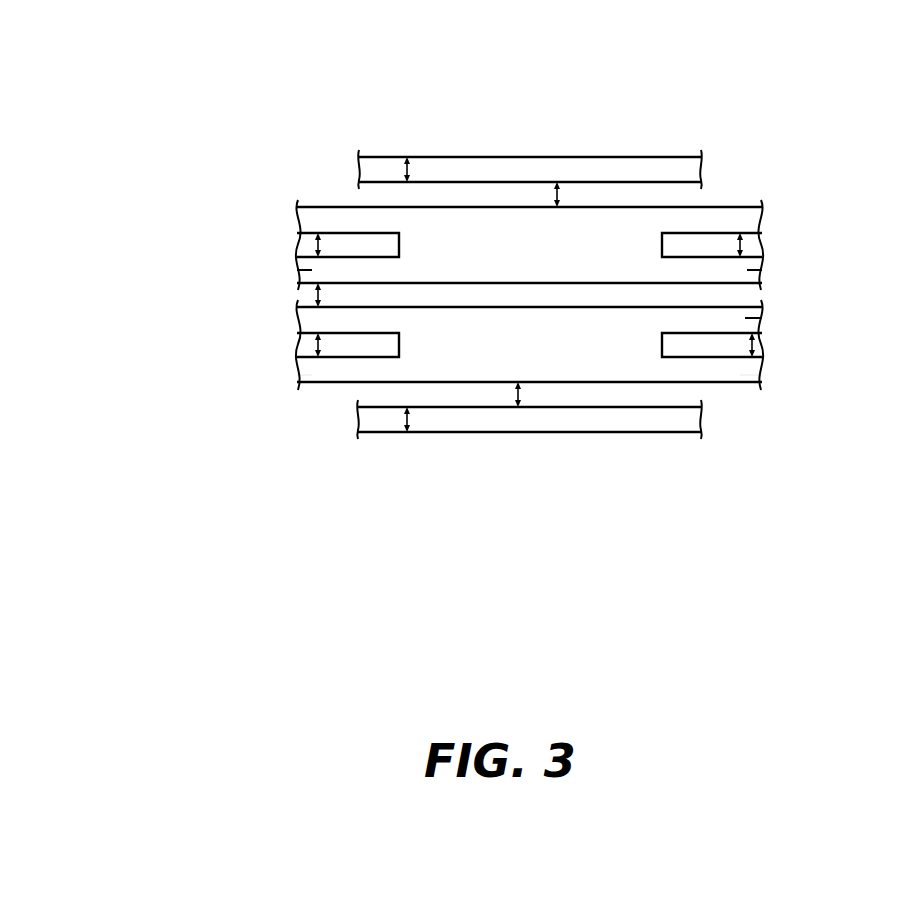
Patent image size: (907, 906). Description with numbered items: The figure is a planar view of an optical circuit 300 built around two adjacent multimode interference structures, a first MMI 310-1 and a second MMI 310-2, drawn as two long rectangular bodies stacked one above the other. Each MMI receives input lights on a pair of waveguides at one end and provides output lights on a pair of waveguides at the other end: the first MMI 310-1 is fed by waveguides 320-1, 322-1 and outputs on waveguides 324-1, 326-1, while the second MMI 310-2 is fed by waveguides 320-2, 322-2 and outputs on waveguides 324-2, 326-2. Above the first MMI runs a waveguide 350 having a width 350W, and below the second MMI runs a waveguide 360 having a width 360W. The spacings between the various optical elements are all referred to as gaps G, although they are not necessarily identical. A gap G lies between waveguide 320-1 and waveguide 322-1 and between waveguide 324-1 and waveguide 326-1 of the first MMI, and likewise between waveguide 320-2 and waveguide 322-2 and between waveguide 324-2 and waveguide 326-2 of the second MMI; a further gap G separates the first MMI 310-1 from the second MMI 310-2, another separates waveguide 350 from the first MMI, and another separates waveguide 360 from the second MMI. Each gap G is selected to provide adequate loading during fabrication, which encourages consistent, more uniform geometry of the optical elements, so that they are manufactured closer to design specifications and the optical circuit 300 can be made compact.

The optical circuit 300 is at (226, 76).
The first MMI 310-1 is at (529, 245).
The second MMI 310-2 is at (529, 345).
The waveguide 320-1 is at (300, 214).
The waveguide 322-1 is at (310, 270).
The waveguide 324-1 is at (733, 217).
The waveguide 326-1 is at (752, 269).
The waveguide 320-2 is at (310, 321).
The waveguide 322-2 is at (300, 375).
The waveguide 324-2 is at (744, 318).
The waveguide 326-2 is at (720, 370).
The waveguide 350 is at (381, 165).
The width of waveguide 350W is at (408, 157).
The waveguide 360 is at (619, 420).
The width of waveguide 360W is at (407, 432).
The gap G is at (556, 182).